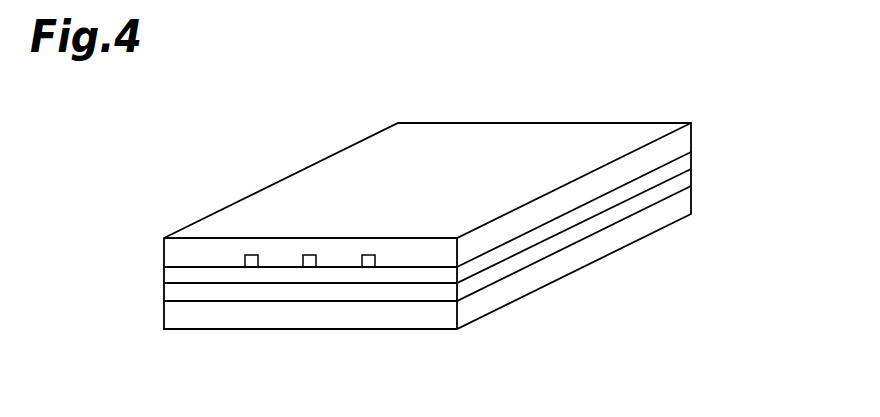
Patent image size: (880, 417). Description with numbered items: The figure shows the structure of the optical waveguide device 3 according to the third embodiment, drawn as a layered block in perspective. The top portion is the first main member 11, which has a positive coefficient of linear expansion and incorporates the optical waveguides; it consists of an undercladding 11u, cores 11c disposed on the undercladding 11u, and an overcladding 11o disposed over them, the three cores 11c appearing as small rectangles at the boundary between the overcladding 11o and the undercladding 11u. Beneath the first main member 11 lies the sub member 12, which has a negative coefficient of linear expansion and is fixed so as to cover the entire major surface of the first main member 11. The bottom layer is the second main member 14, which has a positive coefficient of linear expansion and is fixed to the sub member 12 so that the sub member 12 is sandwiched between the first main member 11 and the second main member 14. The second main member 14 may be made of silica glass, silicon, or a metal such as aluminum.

The optical waveguide device 3 is at (588, 68).
The first main member 11 is at (788, 78).
The overcladding 11o is at (692, 132).
The undercladding 11u is at (692, 157).
The cores 11c is at (362, 263).
The sub member 12 is at (692, 177).
The second main member 14 is at (692, 200).